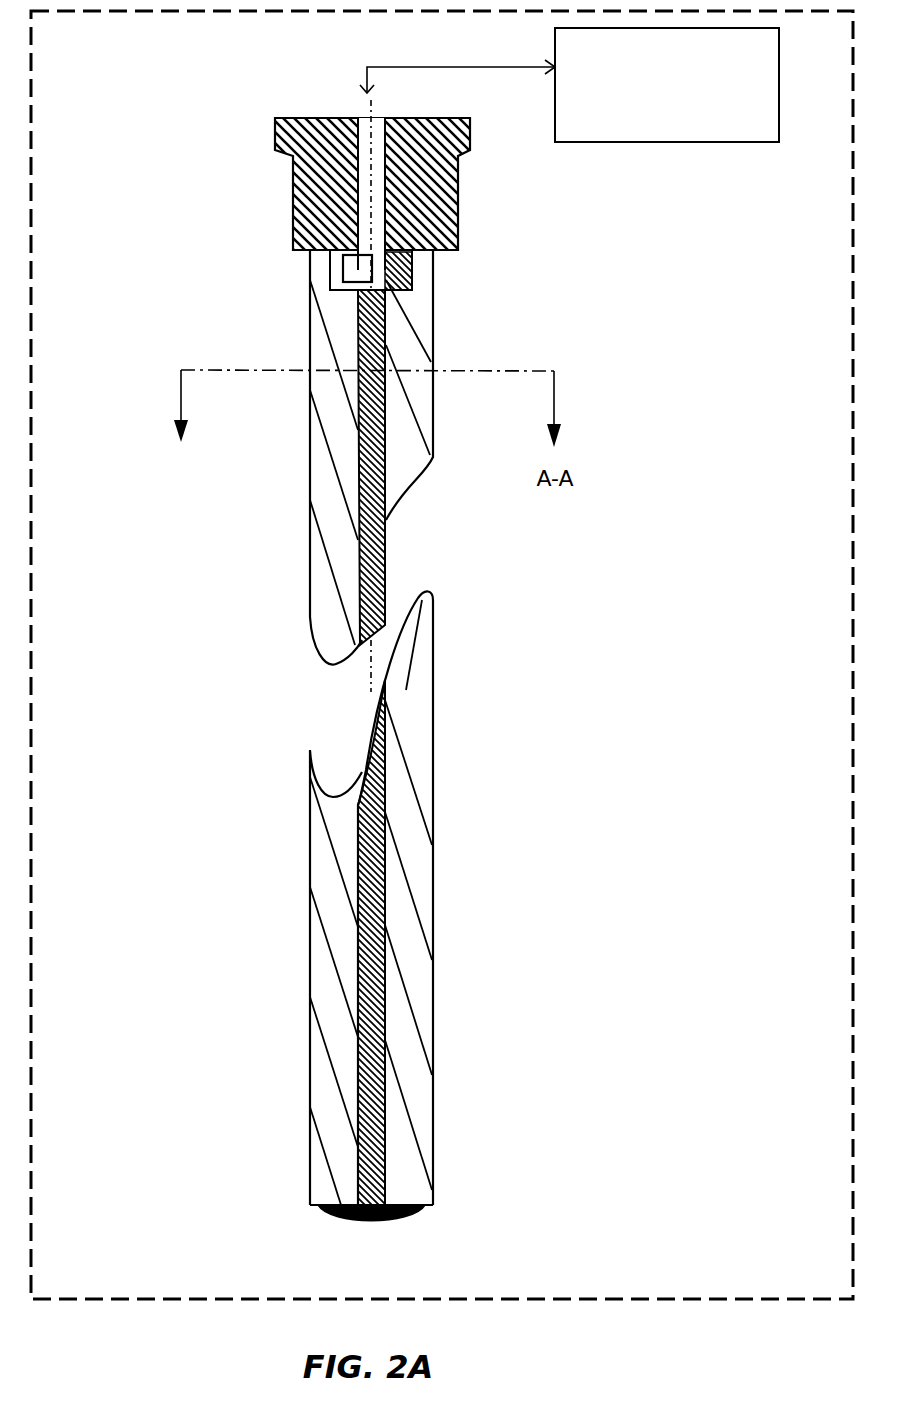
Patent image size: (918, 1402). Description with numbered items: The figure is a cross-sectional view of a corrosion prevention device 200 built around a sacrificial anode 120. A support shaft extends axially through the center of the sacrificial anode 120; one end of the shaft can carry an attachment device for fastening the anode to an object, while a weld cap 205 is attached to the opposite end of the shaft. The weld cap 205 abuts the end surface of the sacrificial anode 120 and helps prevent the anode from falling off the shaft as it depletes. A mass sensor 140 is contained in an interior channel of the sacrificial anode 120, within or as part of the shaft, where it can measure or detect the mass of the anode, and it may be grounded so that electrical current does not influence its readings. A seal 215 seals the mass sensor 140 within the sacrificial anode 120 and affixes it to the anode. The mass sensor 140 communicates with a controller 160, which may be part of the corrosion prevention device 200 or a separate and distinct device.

The sacrificial anode 120 is at (433, 842).
The mass sensor 140 is at (420, 268).
The controller 160 is at (645, 97).
The corrosion prevention device 200 is at (779, 1285).
The weld cap 205 is at (350, 1222).
The seal 215 is at (458, 210).